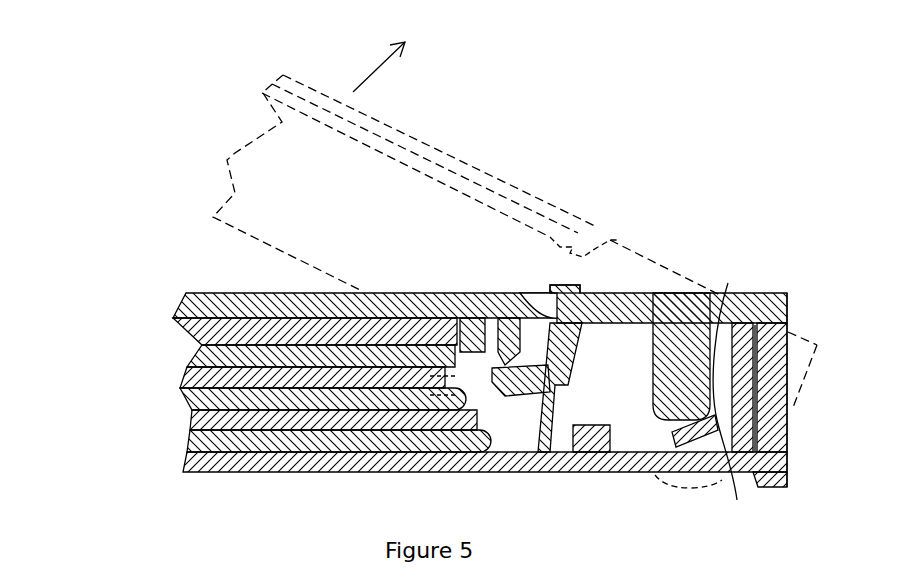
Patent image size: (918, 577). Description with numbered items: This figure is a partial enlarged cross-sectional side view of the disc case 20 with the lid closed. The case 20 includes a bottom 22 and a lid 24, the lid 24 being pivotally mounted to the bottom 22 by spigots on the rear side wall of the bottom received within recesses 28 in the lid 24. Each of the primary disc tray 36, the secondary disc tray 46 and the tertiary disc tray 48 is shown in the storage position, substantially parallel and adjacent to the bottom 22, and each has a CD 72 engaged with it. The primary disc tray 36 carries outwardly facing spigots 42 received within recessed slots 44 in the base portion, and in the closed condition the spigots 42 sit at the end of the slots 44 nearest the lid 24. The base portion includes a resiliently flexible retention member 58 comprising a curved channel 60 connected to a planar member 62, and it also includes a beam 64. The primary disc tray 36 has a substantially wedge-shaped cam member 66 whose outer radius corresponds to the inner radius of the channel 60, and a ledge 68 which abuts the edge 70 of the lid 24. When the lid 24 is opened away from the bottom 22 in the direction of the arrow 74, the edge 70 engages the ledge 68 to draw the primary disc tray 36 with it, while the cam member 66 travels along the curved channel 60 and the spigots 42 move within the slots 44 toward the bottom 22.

The case 20 is at (202, 492).
The bottom 22 is at (274, 468).
The lid 24 is at (456, 160).
The recesses 28 is at (780, 296).
The primary disc tray 36 is at (578, 368).
The spigots 42 is at (667, 296).
The recessed slots 44 is at (713, 300).
The secondary disc tray 46 is at (180, 400).
The tertiary disc tray 48 is at (190, 443).
The retention member 58 is at (787, 470).
The curved channel 60 is at (723, 478).
The planar member 62 is at (788, 404).
The beam 64 is at (607, 424).
The cam member 66 is at (675, 472).
The ledge 68 is at (560, 303).
The edge 70 is at (532, 278).
The CD 72 is at (183, 331).
The arrow 74 is at (372, 68).